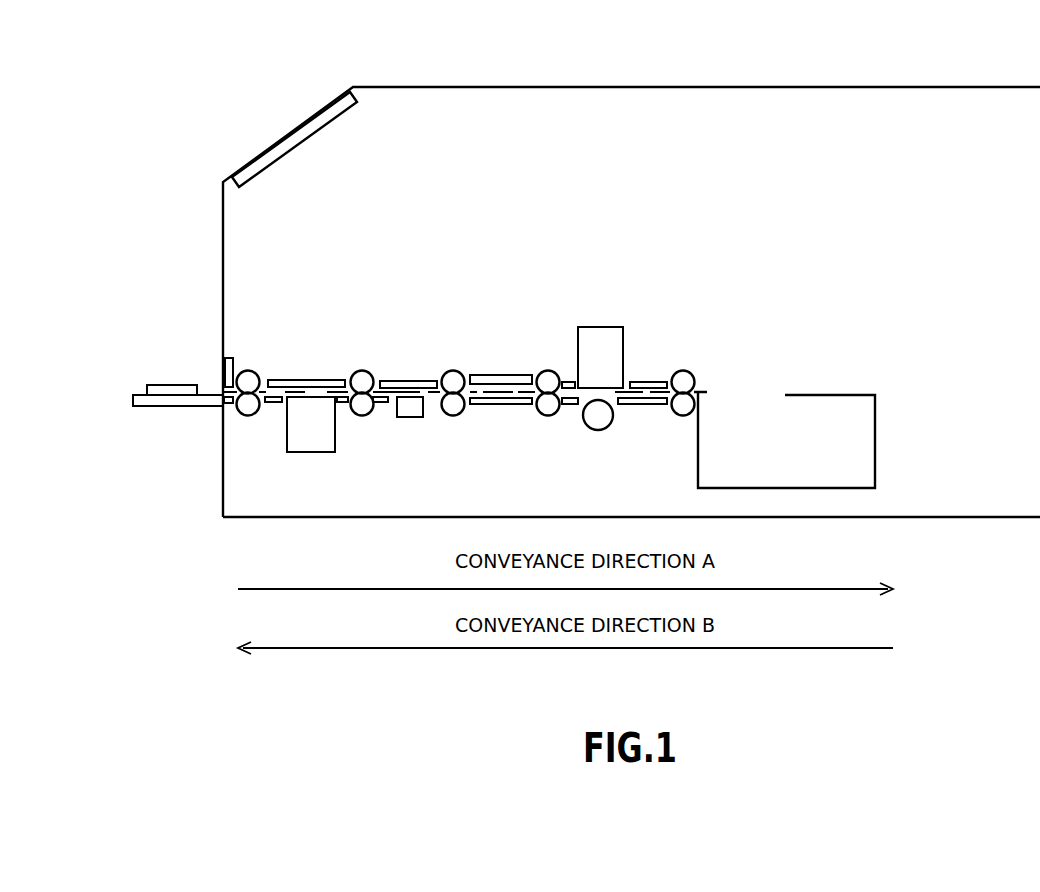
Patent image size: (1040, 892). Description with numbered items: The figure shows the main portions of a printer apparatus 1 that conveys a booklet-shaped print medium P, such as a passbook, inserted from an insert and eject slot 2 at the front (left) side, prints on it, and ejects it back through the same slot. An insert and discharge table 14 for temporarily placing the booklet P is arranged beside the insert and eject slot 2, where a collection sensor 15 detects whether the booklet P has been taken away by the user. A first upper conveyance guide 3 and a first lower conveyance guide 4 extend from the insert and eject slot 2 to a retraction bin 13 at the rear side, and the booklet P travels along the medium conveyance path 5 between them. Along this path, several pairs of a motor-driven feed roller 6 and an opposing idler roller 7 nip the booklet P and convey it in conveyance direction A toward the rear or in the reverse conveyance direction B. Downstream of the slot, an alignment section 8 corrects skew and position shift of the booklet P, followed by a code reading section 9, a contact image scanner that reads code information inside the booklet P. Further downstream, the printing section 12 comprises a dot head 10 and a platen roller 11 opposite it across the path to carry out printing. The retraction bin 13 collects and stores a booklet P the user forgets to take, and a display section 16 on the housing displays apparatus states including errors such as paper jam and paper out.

The printer apparatus 1 is at (670, 88).
The insert and eject slot 2 is at (220, 387).
The first upper conveyance guide 3 is at (304, 379).
The first lower conveyance guide 4 is at (229, 405).
The medium conveyance path 5 is at (264, 378).
The feed roller 6 is at (248, 371).
The idler roller 7 is at (248, 416).
The alignment section 8 is at (305, 454).
The code reading section 9 is at (407, 418).
The dot head 10 is at (598, 326).
The platen roller 11 is at (598, 431).
The printing section 12 is at (578, 305).
The retraction bin 13 is at (875, 430).
The insert and discharge table 14 is at (148, 407).
The collection sensor 15 is at (224, 360).
The display section 16 is at (340, 102).
The print medium P is at (155, 385).